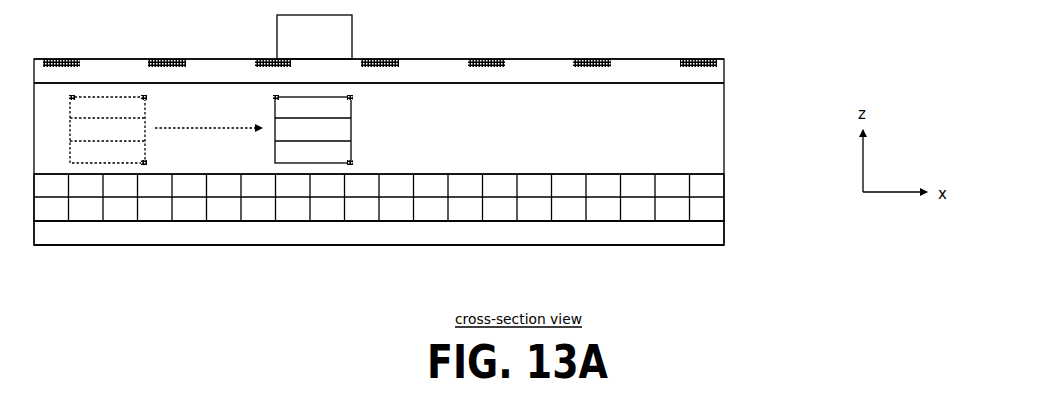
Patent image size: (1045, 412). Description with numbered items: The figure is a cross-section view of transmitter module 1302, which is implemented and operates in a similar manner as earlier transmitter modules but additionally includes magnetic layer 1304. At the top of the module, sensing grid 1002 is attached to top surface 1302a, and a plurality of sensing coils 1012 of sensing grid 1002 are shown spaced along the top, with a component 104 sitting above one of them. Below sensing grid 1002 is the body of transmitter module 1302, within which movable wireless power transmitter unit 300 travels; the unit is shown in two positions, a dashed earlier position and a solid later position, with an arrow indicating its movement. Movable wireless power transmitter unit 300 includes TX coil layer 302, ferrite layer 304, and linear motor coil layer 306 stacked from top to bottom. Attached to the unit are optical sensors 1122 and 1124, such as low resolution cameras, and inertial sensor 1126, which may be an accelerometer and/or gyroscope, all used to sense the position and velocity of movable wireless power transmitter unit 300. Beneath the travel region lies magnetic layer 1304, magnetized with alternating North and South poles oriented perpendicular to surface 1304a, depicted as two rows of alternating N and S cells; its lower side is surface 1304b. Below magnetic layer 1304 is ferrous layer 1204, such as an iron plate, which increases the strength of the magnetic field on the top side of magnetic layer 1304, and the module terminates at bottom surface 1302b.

The sensing coils 1012 is at (62, 57).
The die 104 is at (328, 46).
The transmitter module 1302 is at (724, 146).
The top surface of transmitter module 1302a is at (626, 59).
The bottom surface of transmitter module 1302b is at (667, 245).
The sensing grid 1002 is at (724, 59).
The magnetic layer 1304 is at (724, 190).
The surface of magnetic layer 1304a is at (627, 174).
The bottom surface of magnetic layer 1304b is at (667, 221).
The ferrous layer 1204 is at (397, 242).
The movable wireless power transmitter unit 300 is at (148, 147).
The TX coil layer 302 is at (121, 116).
The ferrite layer 304 is at (121, 139).
The linear motor coil layer 306 is at (121, 161).
The inertial sensor 1126 is at (272, 97).
The optical sensor 1122 is at (355, 98).
The optical sensor 1124 is at (355, 163).